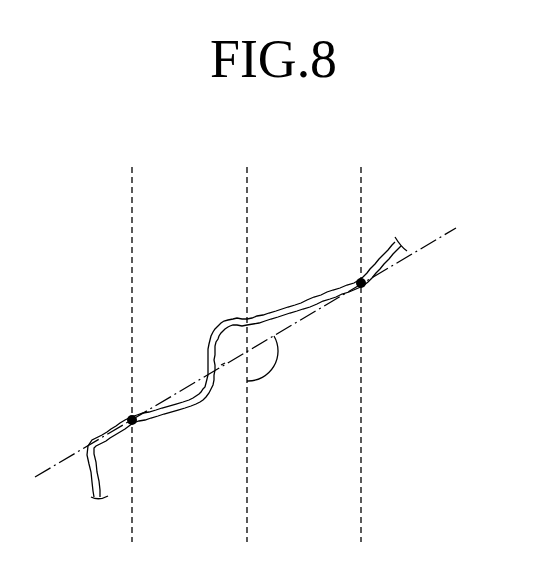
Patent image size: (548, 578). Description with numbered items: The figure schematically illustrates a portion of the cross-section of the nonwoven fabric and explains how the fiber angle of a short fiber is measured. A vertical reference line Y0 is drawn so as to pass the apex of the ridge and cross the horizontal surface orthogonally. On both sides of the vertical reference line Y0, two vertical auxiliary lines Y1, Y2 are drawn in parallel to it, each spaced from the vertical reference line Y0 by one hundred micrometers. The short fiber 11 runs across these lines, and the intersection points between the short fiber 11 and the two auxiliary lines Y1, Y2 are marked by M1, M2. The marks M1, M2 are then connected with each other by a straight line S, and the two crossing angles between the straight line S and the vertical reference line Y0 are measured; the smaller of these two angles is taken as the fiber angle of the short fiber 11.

The short fiber 11 is at (286, 306).
The straight line S is at (443, 235).
The vertical auxiliary line Y1 is at (132, 195).
The vertical reference line Y0 is at (247, 195).
The vertical auxiliary line Y2 is at (361, 195).
The mark M1 is at (129, 417).
The mark M2 is at (366, 286).